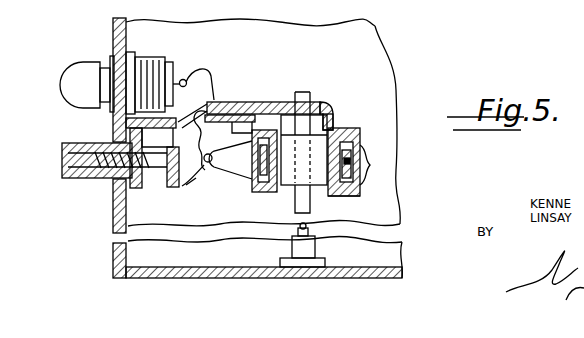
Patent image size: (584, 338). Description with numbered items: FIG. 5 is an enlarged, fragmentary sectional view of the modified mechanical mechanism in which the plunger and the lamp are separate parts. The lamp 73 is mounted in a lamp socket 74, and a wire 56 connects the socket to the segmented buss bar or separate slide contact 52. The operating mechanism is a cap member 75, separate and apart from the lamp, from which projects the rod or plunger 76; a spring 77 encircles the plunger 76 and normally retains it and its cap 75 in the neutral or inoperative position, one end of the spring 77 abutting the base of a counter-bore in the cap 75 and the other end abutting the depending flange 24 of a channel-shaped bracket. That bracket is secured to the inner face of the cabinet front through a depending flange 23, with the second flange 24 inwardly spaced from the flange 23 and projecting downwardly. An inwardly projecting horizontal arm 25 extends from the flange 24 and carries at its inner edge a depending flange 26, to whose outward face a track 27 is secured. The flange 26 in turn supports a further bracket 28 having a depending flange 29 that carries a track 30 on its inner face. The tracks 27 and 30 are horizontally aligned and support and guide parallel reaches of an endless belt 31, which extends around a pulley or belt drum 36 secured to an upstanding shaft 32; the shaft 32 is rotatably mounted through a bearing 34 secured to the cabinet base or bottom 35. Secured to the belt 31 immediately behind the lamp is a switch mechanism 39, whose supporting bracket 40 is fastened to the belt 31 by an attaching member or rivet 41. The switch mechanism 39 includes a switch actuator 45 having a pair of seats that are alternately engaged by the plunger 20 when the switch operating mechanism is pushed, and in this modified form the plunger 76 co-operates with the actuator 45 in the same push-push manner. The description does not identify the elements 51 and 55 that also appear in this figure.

The plunger 20 is at (210, 172).
The depending flange 23 is at (158, 192).
The second flange 24 is at (192, 140).
The horizontal arm 25 is at (272, 102).
The depending flange 26 is at (296, 210).
The track 27 is at (263, 194).
The further bracket 28 is at (330, 103).
The depending flange 29 is at (340, 196).
The track 30 is at (337, 131).
The endless belt 31 is at (360, 170).
The shaft 32 is at (312, 99).
The bearing 34 is at (312, 246).
The cabinet base or bottom 35 is at (405, 270).
The pulley or belt drum 36 is at (336, 119).
The switch mechanism 39 is at (230, 160).
The supporting bracket 40 is at (205, 178).
The attaching member or rivet 41 is at (357, 154).
The switch actuator 45 is at (210, 182).
The core upper end 51 is at (277, 102).
The segmented buss bar or separate slide contact 52 is at (227, 111).
The contact bracket 55 is at (218, 101).
The wire 56 is at (205, 85).
The lamp 73 is at (84, 70).
The lamp socket 74 is at (152, 67).
The cap member 75 is at (82, 180).
The rod or plunger 76 is at (60, 183).
The spring 77 is at (177, 186).